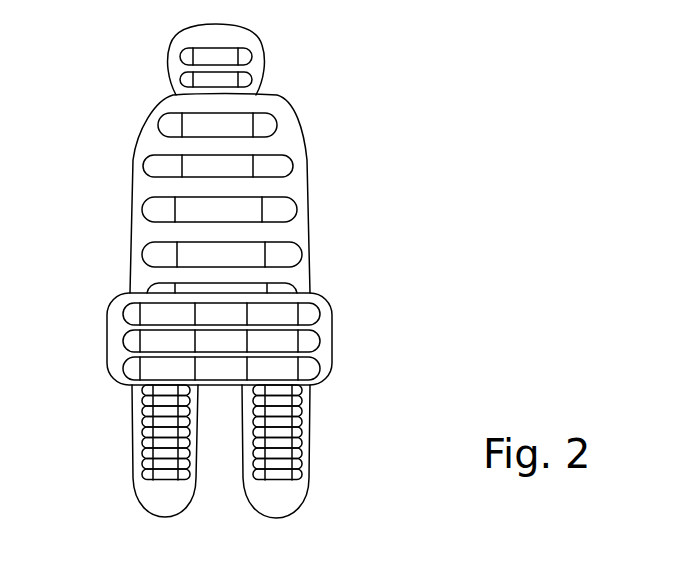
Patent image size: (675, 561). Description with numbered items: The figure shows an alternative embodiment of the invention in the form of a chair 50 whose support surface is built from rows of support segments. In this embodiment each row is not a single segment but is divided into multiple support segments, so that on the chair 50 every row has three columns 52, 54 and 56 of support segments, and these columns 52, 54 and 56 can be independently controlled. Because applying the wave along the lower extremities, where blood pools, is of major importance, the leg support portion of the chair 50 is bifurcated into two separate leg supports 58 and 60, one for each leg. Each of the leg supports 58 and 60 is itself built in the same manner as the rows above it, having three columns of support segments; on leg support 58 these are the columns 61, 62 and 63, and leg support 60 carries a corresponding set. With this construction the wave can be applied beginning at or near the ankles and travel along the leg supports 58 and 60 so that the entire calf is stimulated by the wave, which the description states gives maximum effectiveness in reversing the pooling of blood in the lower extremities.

The chair 50 is at (300, 142).
The column of support segments 52 is at (283, 210).
The column of support segments 54 is at (235, 205).
The column of support segments 56 is at (157, 213).
The leg support 58 is at (308, 465).
The leg support 60 is at (133, 465).
The column of support segments 61 is at (297, 418).
The column of support segments 62 is at (278, 438).
The column of support segments 63 is at (262, 462).